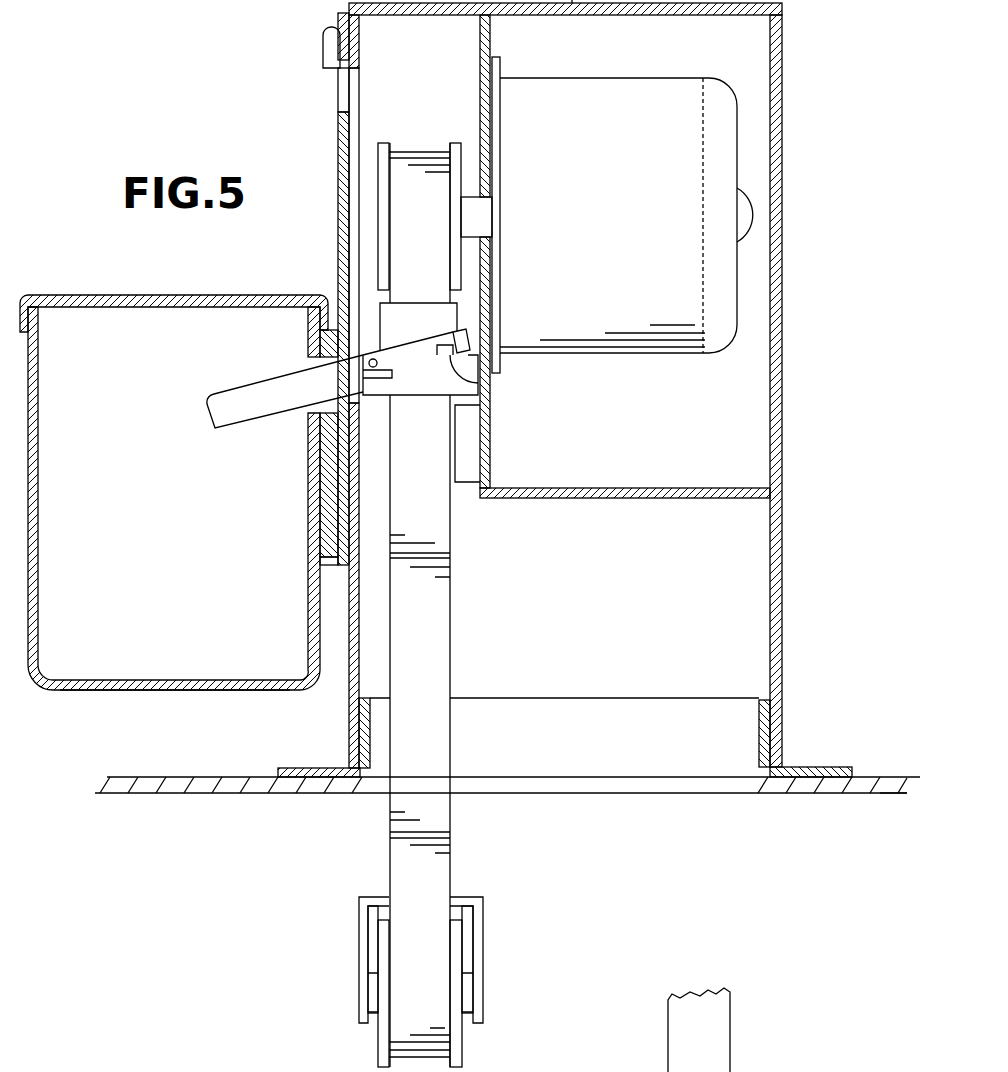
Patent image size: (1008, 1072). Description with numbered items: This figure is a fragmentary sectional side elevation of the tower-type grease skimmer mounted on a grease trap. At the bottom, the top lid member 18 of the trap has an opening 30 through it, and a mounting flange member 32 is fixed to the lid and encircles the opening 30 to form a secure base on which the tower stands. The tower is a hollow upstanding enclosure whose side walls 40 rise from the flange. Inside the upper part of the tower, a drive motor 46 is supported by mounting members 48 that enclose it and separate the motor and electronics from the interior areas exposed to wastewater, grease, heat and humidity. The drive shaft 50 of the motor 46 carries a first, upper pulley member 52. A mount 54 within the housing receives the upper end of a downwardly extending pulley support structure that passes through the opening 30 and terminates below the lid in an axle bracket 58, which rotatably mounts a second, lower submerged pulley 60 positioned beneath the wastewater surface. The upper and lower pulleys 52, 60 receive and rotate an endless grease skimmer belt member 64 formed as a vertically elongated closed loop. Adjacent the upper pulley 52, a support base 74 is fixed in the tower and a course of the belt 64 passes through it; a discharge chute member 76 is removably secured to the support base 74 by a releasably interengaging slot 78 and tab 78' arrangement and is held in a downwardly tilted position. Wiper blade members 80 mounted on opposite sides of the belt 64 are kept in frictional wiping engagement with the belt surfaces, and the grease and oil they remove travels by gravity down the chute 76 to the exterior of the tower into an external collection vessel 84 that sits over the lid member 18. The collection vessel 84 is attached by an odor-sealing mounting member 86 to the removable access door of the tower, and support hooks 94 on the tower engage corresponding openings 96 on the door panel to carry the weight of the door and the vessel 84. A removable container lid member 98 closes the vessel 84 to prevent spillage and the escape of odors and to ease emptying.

The top lid member 18 is at (878, 776).
The opening 30 is at (650, 793).
The mounting flange member 32 is at (832, 767).
The side walls 40 is at (348, 718).
The drive motor 46 is at (600, 357).
The mounting members 48 is at (492, 435).
The drive shaft 50 is at (480, 215).
The first, upper pulley member 52 is at (455, 143).
The mount 54 is at (465, 486).
The axle bracket 58 is at (484, 932).
The second, lower submerged pulley 60 is at (462, 1045).
The endless grease skimmer belt member 64 is at (452, 865).
The support base 74 is at (420, 397).
The discharge chute member 76 is at (208, 407).
The slot 78 is at (502, 327).
The tab 78' is at (499, 373).
The wiper blade member 80 is at (420, 302).
The external collection vessel 84 is at (160, 692).
The odor-sealing mounting member 86 is at (332, 557).
The support hooks 94 is at (322, 50).
The openings 96 is at (338, 90).
The removable container lid member 98 is at (182, 294).